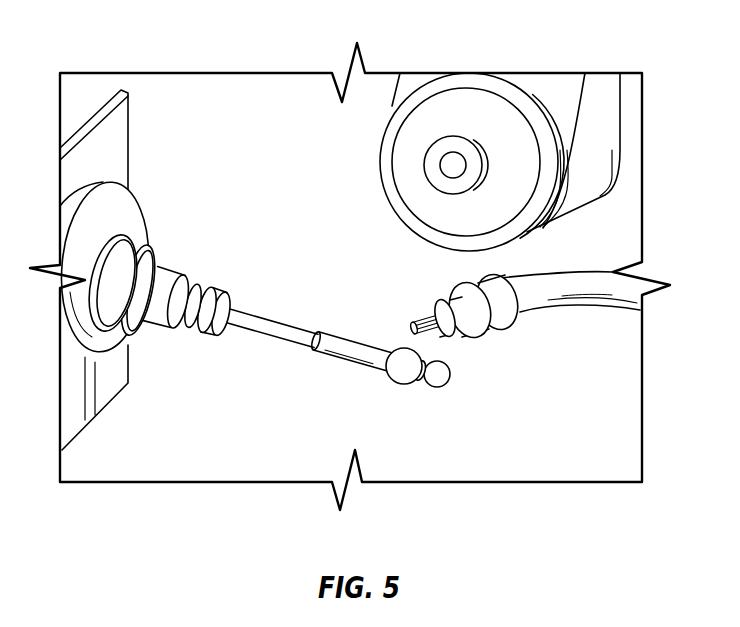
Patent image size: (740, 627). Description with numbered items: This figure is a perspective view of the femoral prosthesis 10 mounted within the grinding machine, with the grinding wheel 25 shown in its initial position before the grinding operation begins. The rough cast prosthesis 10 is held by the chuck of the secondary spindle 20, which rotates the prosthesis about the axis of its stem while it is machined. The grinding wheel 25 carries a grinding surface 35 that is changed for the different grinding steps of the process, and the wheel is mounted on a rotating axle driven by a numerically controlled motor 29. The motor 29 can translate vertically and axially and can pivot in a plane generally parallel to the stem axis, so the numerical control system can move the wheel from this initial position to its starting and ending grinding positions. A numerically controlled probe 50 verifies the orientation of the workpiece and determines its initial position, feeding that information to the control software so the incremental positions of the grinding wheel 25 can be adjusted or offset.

The femoral prosthesis 10 is at (447, 389).
The secondary spindle 20 is at (174, 322).
The grinding wheel 25 is at (443, 213).
The numerically controlled motor 29 is at (575, 195).
The grinding surface 35 is at (382, 145).
The probe 50 is at (469, 336).